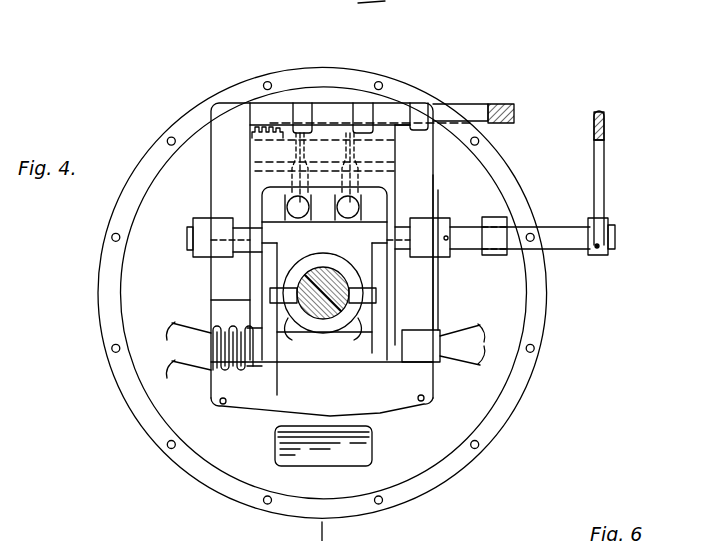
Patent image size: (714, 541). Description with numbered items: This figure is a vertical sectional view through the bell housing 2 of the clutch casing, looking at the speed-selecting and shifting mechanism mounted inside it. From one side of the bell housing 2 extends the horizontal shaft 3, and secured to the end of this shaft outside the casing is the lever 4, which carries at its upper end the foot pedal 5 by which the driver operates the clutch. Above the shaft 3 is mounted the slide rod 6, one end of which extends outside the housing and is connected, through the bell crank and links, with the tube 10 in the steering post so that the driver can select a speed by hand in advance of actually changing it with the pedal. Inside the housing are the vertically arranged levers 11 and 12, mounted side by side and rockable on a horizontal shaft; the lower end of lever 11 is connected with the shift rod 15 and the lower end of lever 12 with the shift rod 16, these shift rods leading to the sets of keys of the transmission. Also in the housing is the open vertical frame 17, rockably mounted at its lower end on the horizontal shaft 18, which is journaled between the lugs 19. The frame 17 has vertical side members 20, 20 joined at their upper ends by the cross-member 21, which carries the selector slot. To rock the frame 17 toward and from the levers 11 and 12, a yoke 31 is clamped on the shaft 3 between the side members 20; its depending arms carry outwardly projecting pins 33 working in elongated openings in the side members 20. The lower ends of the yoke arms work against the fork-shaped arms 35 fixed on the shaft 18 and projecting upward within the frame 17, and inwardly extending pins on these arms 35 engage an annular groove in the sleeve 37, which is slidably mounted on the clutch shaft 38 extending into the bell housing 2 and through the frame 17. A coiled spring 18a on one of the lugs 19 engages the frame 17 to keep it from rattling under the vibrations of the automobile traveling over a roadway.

The bell housing 2 is at (506, 170).
The shaft 3 is at (615, 237).
The lever 4 is at (604, 160).
The foot pedal 5 is at (320, 70).
The slide rod 6 is at (475, 110).
The tube 10 is at (268, 136).
The lever 11 is at (367, 191).
The lever 12 is at (318, 197).
The shift rod 15 is at (350, 218).
The shift rod 16 is at (299, 218).
The vertical frame 17 is at (405, 300).
The horizontal shaft 18 is at (256, 204).
The coiled spring 18a is at (239, 378).
The lugs 19 is at (213, 362).
The side members 20 is at (262, 297).
The cross-member 21 is at (262, 176).
The yoke 31 is at (375, 232).
The pins 33 is at (262, 266).
The fork-shaped arms 35 is at (247, 318).
The sleeve 37 is at (330, 322).
The clutch shaft 38 is at (318, 318).